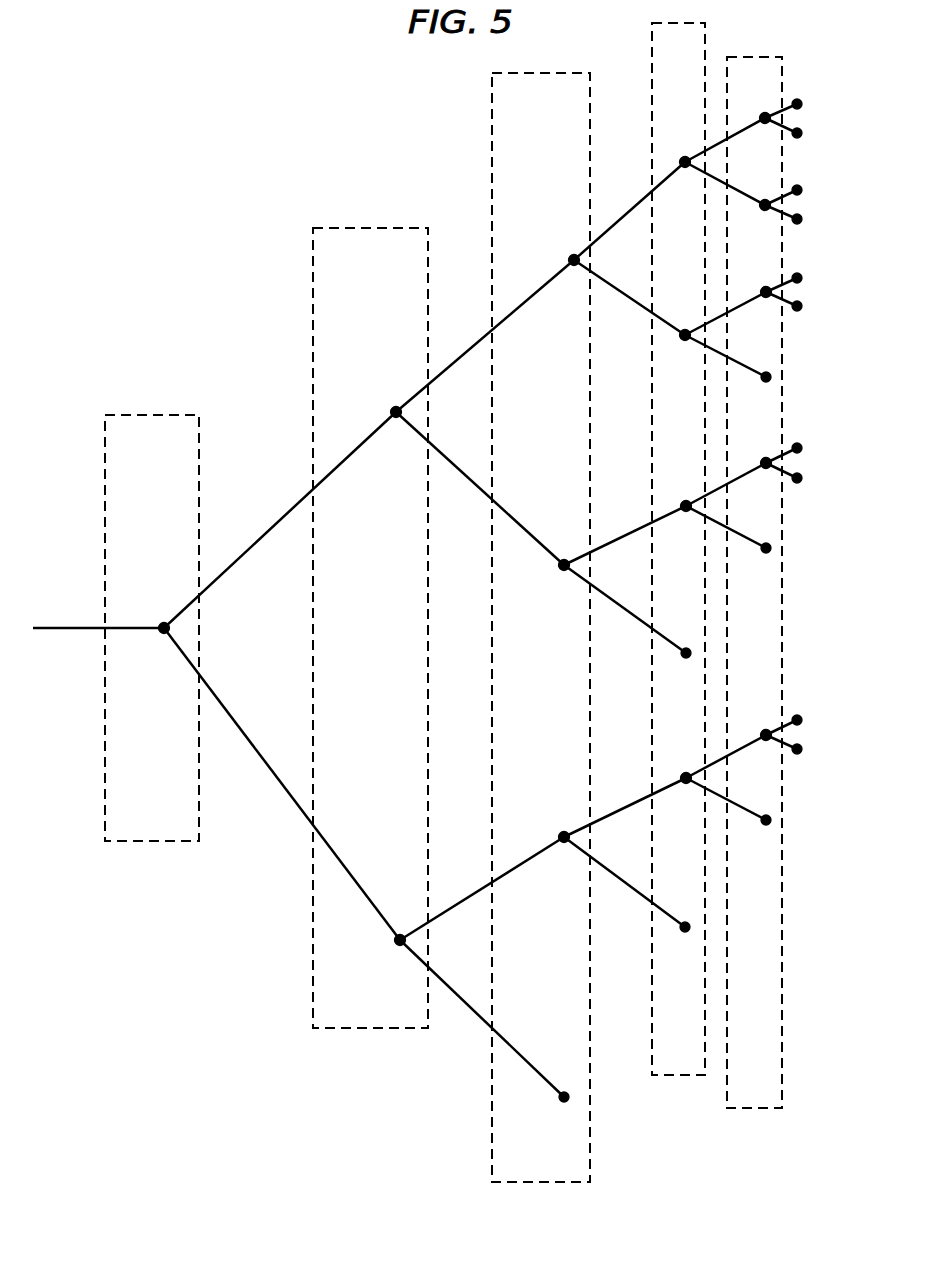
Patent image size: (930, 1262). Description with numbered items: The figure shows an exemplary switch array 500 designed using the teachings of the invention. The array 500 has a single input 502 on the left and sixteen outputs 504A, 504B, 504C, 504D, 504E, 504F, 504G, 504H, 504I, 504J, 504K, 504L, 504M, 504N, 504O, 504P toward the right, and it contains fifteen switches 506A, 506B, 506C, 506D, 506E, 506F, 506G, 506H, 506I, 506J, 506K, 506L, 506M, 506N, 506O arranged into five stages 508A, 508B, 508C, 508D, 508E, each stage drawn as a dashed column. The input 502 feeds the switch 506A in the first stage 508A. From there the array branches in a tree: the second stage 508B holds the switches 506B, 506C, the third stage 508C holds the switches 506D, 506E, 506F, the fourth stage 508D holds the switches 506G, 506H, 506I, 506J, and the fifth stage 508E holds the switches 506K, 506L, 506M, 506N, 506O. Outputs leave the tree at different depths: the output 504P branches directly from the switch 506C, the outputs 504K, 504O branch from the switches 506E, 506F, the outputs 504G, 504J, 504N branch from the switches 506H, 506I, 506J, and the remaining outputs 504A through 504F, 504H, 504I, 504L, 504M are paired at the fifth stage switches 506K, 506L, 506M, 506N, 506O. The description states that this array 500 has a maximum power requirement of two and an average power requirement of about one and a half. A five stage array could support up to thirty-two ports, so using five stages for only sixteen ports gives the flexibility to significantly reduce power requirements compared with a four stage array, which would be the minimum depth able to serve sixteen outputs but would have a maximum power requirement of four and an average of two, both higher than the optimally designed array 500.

The array 500 is at (204, 148).
The input 502 is at (71, 627).
The output 504A is at (803, 103).
The output 504B is at (803, 134).
The output 504C is at (803, 189).
The output 504D is at (803, 220).
The output 504E is at (803, 277).
The output 504F is at (803, 307).
The output 504G is at (772, 376).
The output 504H is at (803, 447).
The output 504I is at (803, 479).
The output 504J is at (772, 547).
The output 504K is at (692, 651).
The output 504L is at (803, 719).
The output 504M is at (803, 750).
The output 504N is at (772, 819).
The output 504O is at (691, 925).
The output 504P is at (563, 1090).
The switch 506A is at (162, 622).
The switch 506B is at (392, 405).
The switch 506C is at (400, 932).
The switch 506D is at (572, 252).
The switch 506E is at (562, 557).
The switch 506F is at (562, 830).
The switch 506G is at (683, 155).
The switch 506H is at (683, 328).
The switch 506I is at (684, 499).
The switch 506J is at (684, 771).
The switch 506K is at (764, 111).
The switch 506L is at (764, 198).
The switch 506M is at (765, 285).
The switch 506N is at (765, 456).
The switch 506O is at (765, 728).
The stage 508A is at (161, 414).
The stage 508B is at (368, 227).
The stage 508C is at (556, 72).
The stage 508D is at (706, 37).
The stage 508E is at (783, 65).